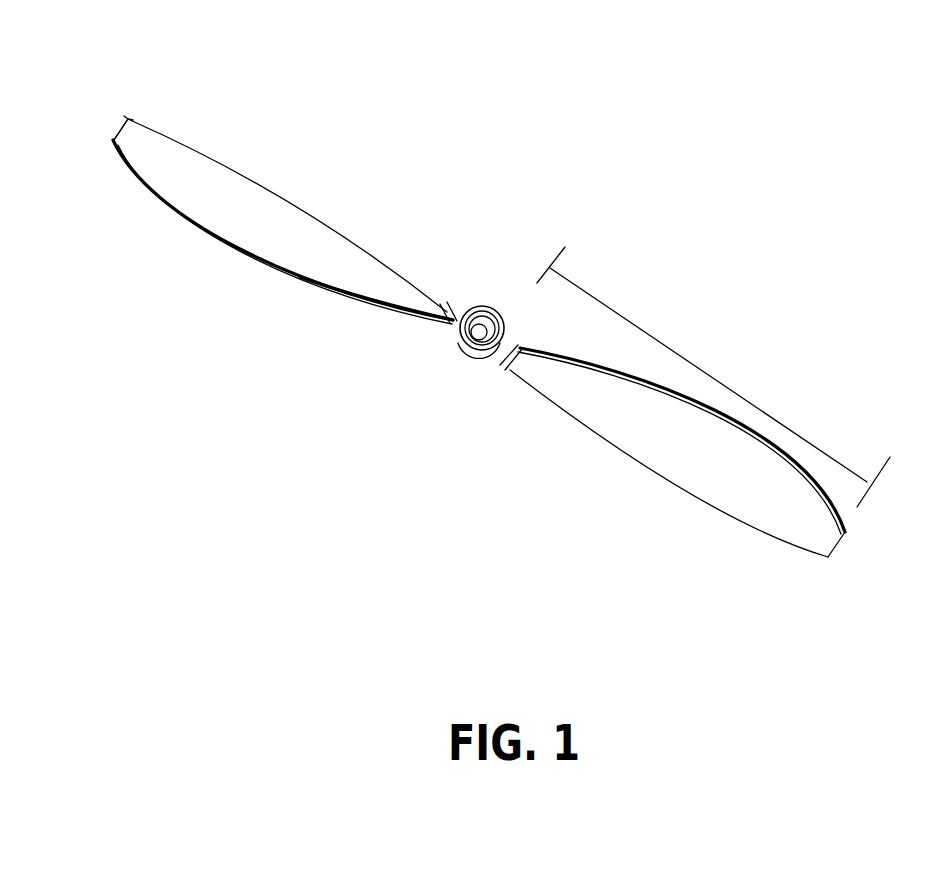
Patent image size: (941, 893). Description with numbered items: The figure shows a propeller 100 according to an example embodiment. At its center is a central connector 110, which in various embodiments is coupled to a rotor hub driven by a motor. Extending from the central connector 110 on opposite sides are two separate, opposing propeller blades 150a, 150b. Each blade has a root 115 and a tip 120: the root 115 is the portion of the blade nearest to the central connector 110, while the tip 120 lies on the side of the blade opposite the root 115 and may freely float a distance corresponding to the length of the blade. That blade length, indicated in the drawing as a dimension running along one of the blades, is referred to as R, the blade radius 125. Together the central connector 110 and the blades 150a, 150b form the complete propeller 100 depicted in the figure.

The propeller 100 is at (198, 568).
The central connector 110 is at (488, 303).
The root 115 is at (412, 293).
The tip 120 is at (140, 127).
The blade radius 125 is at (753, 373).
The propeller blade 150a is at (190, 180).
The propeller blade 150b is at (703, 452).